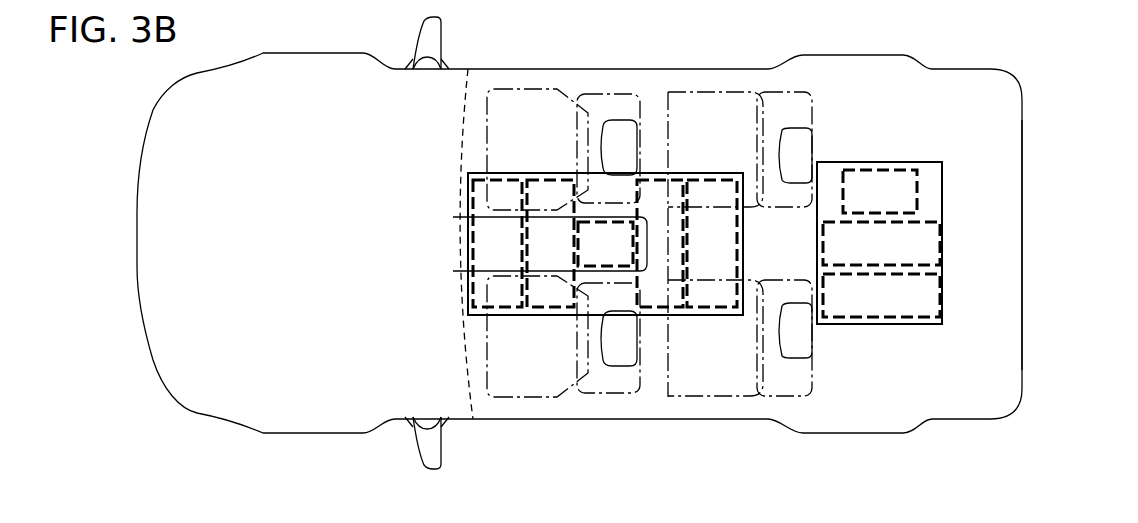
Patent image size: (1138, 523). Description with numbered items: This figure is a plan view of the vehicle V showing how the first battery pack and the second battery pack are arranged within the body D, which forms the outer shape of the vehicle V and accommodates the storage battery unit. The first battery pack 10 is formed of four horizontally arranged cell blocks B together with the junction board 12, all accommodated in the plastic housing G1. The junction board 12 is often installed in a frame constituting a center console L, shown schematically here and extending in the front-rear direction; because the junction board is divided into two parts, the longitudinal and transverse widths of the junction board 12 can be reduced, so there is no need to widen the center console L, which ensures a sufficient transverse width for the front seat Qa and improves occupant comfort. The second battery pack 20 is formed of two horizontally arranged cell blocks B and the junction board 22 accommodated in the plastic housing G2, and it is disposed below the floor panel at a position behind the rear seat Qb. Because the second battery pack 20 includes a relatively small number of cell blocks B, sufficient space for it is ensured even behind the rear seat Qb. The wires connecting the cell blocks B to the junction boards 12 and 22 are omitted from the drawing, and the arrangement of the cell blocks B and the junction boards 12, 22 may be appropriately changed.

The vehicle V is at (1018, 62).
The body D is at (1022, 220).
The center console L is at (452, 199).
The front seat Qa is at (572, 92).
The rear seat Qb is at (752, 92).
The plastic housing G1 is at (576, 280).
The plastic housing G2 is at (906, 264).
The first battery pack 10 is at (654, 322).
The junction board 12 is at (607, 220).
The second battery pack 20 is at (877, 332).
The junction board 22 is at (917, 192).
The cell block B is at (517, 178).